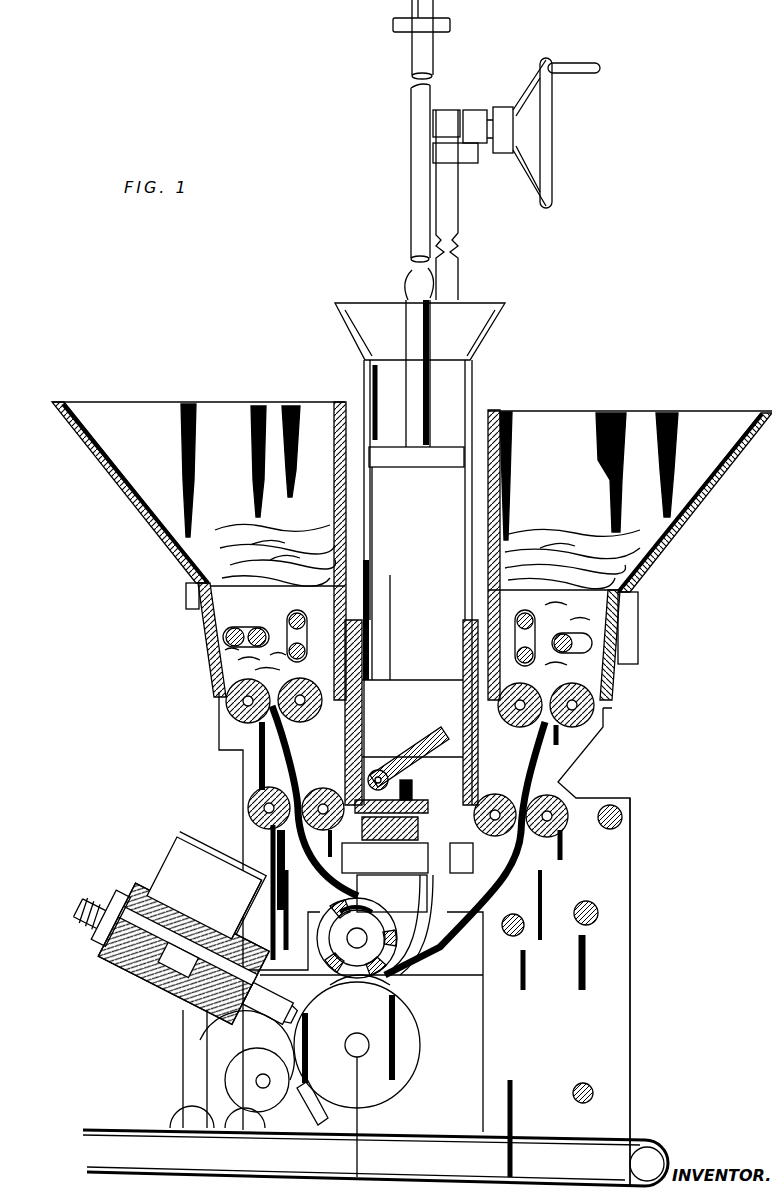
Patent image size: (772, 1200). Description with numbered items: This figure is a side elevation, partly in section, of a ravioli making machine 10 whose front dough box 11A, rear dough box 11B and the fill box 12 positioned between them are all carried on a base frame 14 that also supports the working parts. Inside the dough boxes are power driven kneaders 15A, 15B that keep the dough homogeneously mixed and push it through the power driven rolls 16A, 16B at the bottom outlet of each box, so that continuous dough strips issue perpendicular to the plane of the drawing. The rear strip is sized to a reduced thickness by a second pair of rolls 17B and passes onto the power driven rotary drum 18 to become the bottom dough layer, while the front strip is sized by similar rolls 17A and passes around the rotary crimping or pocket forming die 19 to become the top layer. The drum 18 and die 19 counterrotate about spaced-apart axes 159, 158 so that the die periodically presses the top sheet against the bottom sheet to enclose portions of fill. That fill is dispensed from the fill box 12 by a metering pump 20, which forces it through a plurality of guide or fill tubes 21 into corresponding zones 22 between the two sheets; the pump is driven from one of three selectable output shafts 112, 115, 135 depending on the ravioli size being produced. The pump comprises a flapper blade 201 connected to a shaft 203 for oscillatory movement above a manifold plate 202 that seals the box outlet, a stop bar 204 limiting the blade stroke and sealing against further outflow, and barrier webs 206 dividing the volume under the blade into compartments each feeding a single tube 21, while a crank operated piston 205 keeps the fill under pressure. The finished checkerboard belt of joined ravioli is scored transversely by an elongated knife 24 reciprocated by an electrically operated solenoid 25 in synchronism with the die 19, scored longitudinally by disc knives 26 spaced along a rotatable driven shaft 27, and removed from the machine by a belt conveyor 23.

The ravioli making machine 10 is at (96, 638).
The front dough box 11A is at (145, 418).
The rear dough box 11B is at (586, 430).
The fill box 12 is at (455, 400).
The base frame 14 is at (597, 991).
The power driven kneaders 15A is at (252, 636).
The power driven kneaders 15B is at (570, 640).
The power driven rolls 16A is at (226, 700).
The power driven rolls 16B is at (596, 712).
The second pair of power driven rolls 17A is at (277, 790).
The second pair of power driven rolls 17B is at (488, 795).
The power driven rotary drum 18 is at (357, 1045).
The rotary crimping or pocket forming die 19 is at (330, 930).
The metering pump 20 is at (405, 750).
The guide or fill tubes 21 is at (440, 922).
The zones 22 is at (385, 985).
The belt conveyor 23 is at (143, 1128).
The elongated knife 24 is at (283, 1002).
The electrically operated solenoid 25 is at (204, 927).
The disc knives 26 is at (196, 1020).
The rotatable driven shaft 27 is at (256, 1082).
The shaft 112 is at (514, 915).
The shaft 115 is at (590, 903).
The shaft 135 is at (613, 804).
The axis 158 is at (366, 930).
The axis 159 is at (356, 1057).
The flapper blade 201 is at (409, 747).
The manifold plate 202 is at (385, 845).
The shaft 203 is at (378, 770).
The stop bar 204 is at (406, 782).
The crank operated piston 205 is at (397, 462).
The barrier webs 206 is at (455, 800).